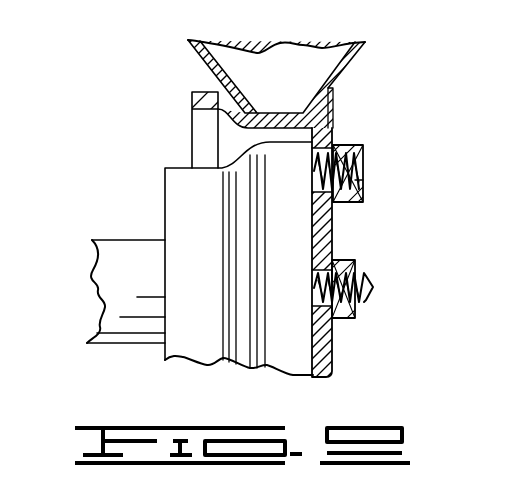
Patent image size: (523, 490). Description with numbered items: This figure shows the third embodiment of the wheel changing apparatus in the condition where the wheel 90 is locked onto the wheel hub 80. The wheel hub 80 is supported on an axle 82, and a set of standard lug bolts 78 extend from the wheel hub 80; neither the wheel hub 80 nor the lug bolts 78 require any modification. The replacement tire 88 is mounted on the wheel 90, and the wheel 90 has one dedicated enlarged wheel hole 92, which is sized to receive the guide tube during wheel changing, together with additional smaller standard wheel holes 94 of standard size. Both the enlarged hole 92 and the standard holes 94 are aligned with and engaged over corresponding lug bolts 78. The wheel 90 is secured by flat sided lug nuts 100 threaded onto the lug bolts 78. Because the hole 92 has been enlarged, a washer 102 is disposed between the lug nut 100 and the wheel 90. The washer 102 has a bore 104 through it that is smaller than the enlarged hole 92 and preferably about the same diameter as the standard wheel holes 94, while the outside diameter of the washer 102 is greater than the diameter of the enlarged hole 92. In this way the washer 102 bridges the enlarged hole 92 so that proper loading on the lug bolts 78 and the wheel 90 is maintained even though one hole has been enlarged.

The lug bolts 78 is at (365, 164).
The wheel hub 80 is at (200, 215).
The axle 82 is at (138, 267).
The replacement tire 88 is at (352, 60).
The wheel 90 is at (200, 95).
The enlarged wheel hole 92 is at (313, 182).
The standard wheel holes 94 is at (313, 292).
The flat sided lug nut 100 is at (343, 152).
The washer 102 is at (333, 136).
The bore 104 is at (365, 178).